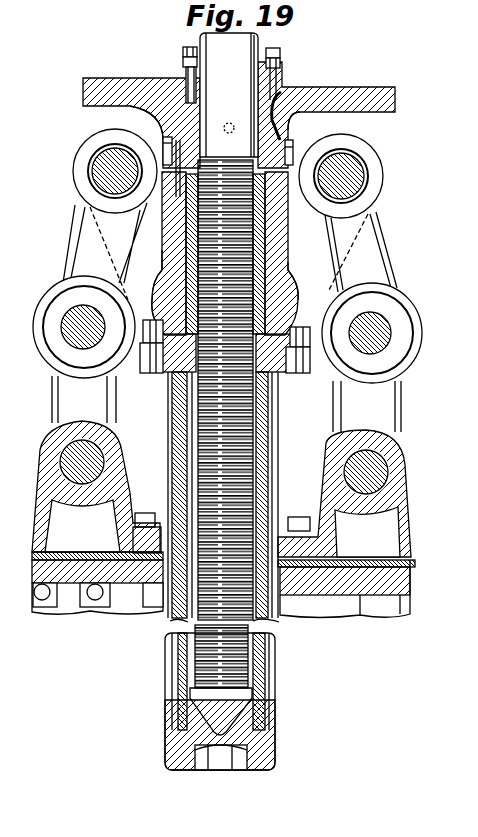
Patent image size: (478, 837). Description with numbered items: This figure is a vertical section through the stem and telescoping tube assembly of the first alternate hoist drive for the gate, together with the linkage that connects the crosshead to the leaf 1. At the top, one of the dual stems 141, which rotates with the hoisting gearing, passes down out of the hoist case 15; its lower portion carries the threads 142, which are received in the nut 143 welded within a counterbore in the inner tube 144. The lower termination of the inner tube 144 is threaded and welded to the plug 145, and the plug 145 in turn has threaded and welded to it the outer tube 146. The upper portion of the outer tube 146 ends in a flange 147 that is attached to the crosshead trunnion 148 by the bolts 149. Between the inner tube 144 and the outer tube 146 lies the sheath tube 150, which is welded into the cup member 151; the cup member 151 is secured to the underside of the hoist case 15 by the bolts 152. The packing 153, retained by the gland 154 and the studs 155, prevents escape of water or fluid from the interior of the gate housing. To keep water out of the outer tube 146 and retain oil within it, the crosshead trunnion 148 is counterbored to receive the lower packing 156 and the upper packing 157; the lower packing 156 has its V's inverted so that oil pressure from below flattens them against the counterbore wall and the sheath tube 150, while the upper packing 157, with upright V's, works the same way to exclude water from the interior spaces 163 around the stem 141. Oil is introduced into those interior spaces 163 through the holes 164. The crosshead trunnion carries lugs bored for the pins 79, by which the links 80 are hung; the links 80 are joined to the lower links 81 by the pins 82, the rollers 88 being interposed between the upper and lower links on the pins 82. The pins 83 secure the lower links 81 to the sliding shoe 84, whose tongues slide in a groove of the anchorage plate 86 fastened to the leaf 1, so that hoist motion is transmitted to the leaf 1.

The leaf 1 is at (366, 619).
The hoist case 15 is at (396, 97).
The pin 79 is at (100, 167).
The link 80 is at (75, 240).
The lower link 81 is at (50, 403).
The pin 82 is at (68, 345).
The pin 83 is at (385, 470).
The sliding shoe 84 is at (44, 497).
The anchorage plate 86 is at (36, 558).
The roller 88 is at (62, 298).
The stem 141 is at (260, 46).
The threads 142 is at (240, 405).
The nut 143 is at (266, 300).
The inner tube 144 is at (262, 432).
The plug 145 is at (245, 765).
The outer tube 146 is at (176, 621).
The flange 147 is at (152, 375).
The crosshead trunnion 148 is at (164, 302).
The bolt 149 is at (297, 375).
The sheath tube 150 is at (266, 619).
The cup member 151 is at (296, 95).
The bolt 152 is at (290, 150).
The packing 153 is at (280, 95).
The gland 154 is at (183, 61).
The stud 155 is at (188, 47).
The lower packing 156 is at (288, 262).
The upper packing 157 is at (160, 250).
The interior space 163 is at (165, 140).
The hole 164 is at (238, 112).